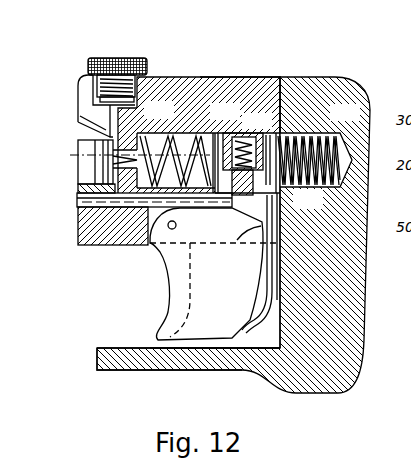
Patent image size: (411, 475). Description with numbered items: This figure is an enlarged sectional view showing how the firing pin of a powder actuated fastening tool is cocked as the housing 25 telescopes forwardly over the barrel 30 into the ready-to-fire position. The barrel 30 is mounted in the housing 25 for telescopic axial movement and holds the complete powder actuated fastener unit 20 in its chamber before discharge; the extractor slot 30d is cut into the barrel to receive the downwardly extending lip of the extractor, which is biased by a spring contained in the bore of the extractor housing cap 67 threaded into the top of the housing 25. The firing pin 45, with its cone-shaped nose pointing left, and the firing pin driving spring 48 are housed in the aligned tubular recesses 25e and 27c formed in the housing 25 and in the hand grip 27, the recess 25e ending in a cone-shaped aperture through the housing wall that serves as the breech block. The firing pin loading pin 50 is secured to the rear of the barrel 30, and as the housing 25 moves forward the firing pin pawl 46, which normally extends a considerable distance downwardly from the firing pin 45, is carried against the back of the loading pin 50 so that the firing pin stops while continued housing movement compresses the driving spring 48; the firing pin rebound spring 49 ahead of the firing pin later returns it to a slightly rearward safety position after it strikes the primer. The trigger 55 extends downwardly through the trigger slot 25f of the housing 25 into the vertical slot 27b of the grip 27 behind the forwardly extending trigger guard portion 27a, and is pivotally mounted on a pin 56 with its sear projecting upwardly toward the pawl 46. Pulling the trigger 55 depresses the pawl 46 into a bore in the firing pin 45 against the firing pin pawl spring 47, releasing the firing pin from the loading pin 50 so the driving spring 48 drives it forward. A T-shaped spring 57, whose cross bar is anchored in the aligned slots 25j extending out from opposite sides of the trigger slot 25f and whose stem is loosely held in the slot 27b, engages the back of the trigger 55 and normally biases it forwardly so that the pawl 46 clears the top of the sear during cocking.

The powder actuated fastener unit 20 is at (88, 158).
The housing 25 is at (168, 77).
The firing pin recess 25e is at (205, 77).
The trigger slot 25f is at (147, 248).
The aligned slots 25j is at (247, 245).
The hand grip 27 is at (352, 298).
The trigger guard portion 27a is at (118, 370).
The vertical slot 27b is at (183, 347).
The tubular recess 27c is at (300, 133).
The barrel 30 is at (78, 190).
The extractor slot 30d is at (80, 132).
The firing pin 45 is at (220, 140).
The firing pin pawl 46 is at (253, 193).
The firing pin pawl spring 47 is at (247, 142).
The firing pin driving spring 48 is at (342, 147).
The firing pin rebound spring 49 is at (172, 137).
The firing pin loading pin 50 is at (80, 200).
The trigger 55 is at (168, 314).
The pin 56 is at (166, 232).
The spring 57 is at (278, 305).
The extractor housing cap 67 is at (127, 60).